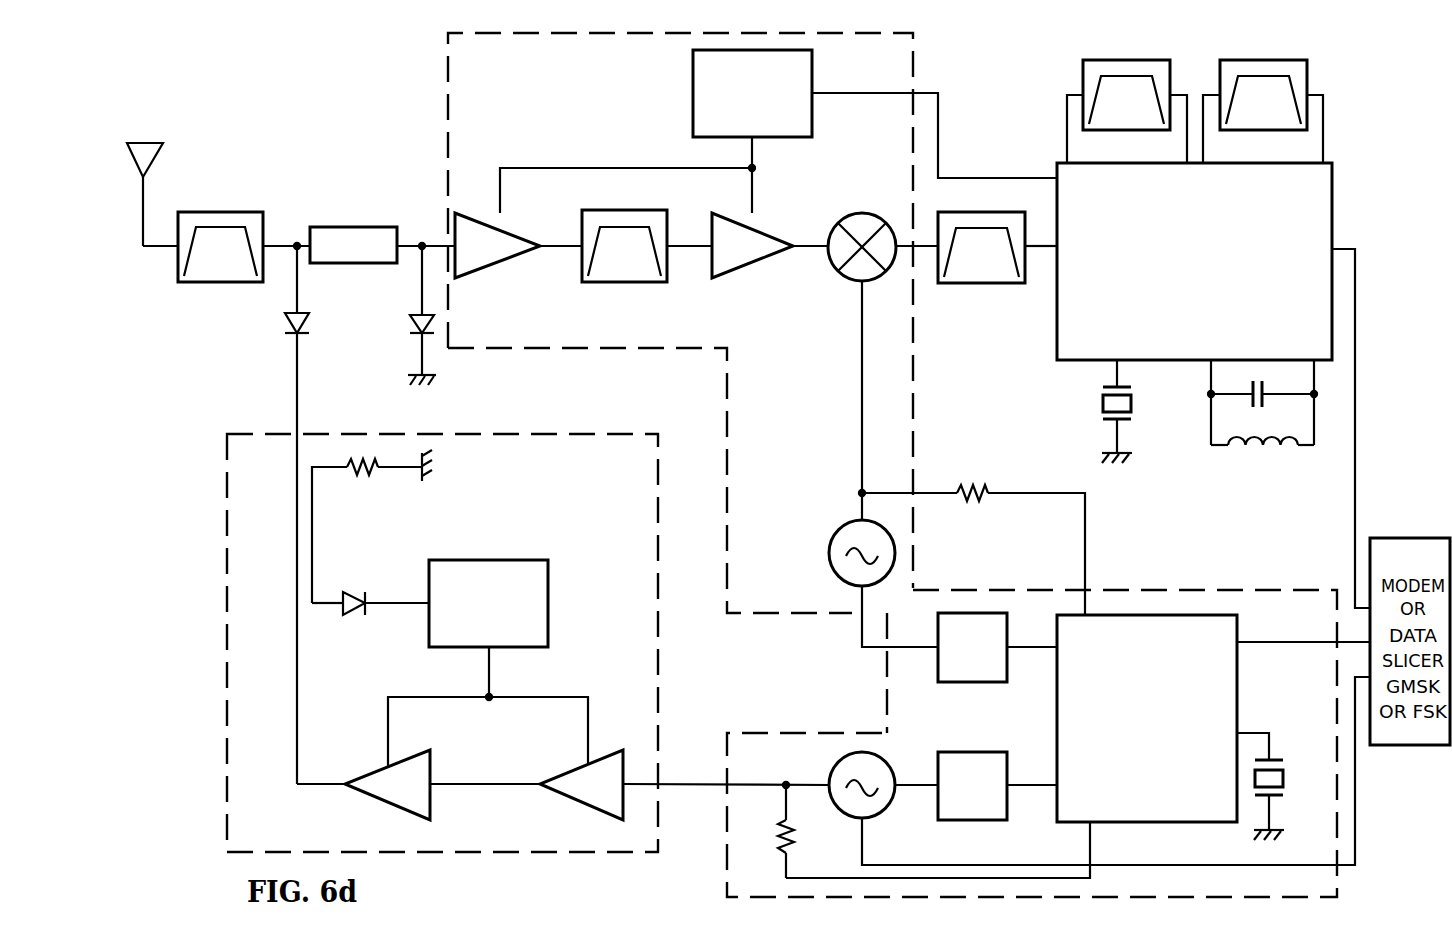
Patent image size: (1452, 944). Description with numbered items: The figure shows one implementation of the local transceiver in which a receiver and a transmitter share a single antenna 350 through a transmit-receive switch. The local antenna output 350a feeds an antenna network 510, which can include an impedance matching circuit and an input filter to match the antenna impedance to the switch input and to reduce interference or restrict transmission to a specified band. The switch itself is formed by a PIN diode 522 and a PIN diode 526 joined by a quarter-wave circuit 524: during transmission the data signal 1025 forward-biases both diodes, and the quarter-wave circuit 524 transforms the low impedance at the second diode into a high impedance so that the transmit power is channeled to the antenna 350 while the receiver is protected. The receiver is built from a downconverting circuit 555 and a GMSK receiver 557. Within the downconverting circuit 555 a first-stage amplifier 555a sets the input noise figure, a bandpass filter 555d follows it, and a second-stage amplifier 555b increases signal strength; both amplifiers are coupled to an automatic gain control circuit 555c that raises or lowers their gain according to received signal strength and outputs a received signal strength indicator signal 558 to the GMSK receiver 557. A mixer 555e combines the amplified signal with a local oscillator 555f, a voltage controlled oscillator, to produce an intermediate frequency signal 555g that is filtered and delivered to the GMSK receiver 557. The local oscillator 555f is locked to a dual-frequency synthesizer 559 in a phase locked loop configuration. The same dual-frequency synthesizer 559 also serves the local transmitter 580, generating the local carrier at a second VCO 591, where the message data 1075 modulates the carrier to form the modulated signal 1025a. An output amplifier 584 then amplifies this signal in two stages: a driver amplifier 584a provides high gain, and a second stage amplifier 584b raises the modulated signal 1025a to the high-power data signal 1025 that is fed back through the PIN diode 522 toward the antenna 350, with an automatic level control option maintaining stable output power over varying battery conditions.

The antenna 350 is at (158, 154).
The local antenna output 350a is at (152, 248).
The antenna network 510 is at (252, 209).
The PIN diode 522 is at (305, 323).
The quarter-wave circuit 524 is at (387, 225).
The PIN diode 526 is at (430, 319).
The downconverting circuit 555 is at (915, 365).
The first-stage amplifier 555a is at (468, 214).
The second-stage amplifier 555b is at (773, 253).
The automatic gain control circuit 555c is at (693, 63).
The bandpass filter 555d is at (637, 217).
The mixer 555e is at (851, 276).
The local oscillator 555f is at (829, 543).
The intermediate frequency signal 555g is at (1043, 252).
The GMSK receiver 557 is at (1090, 318).
The received signal strength indicator signal 558 is at (942, 108).
The dual-frequency synthesizer 559 is at (1148, 615).
The local transmitter 580 is at (1278, 592).
The output amplifier 584 is at (488, 853).
The driver amplifier 584a is at (612, 750).
The second stage amplifier 584b is at (410, 752).
The VCO 591 is at (844, 807).
The data signal 1025 is at (294, 671).
The modulated signal 1025a is at (677, 787).
The message data 1075 is at (1352, 826).